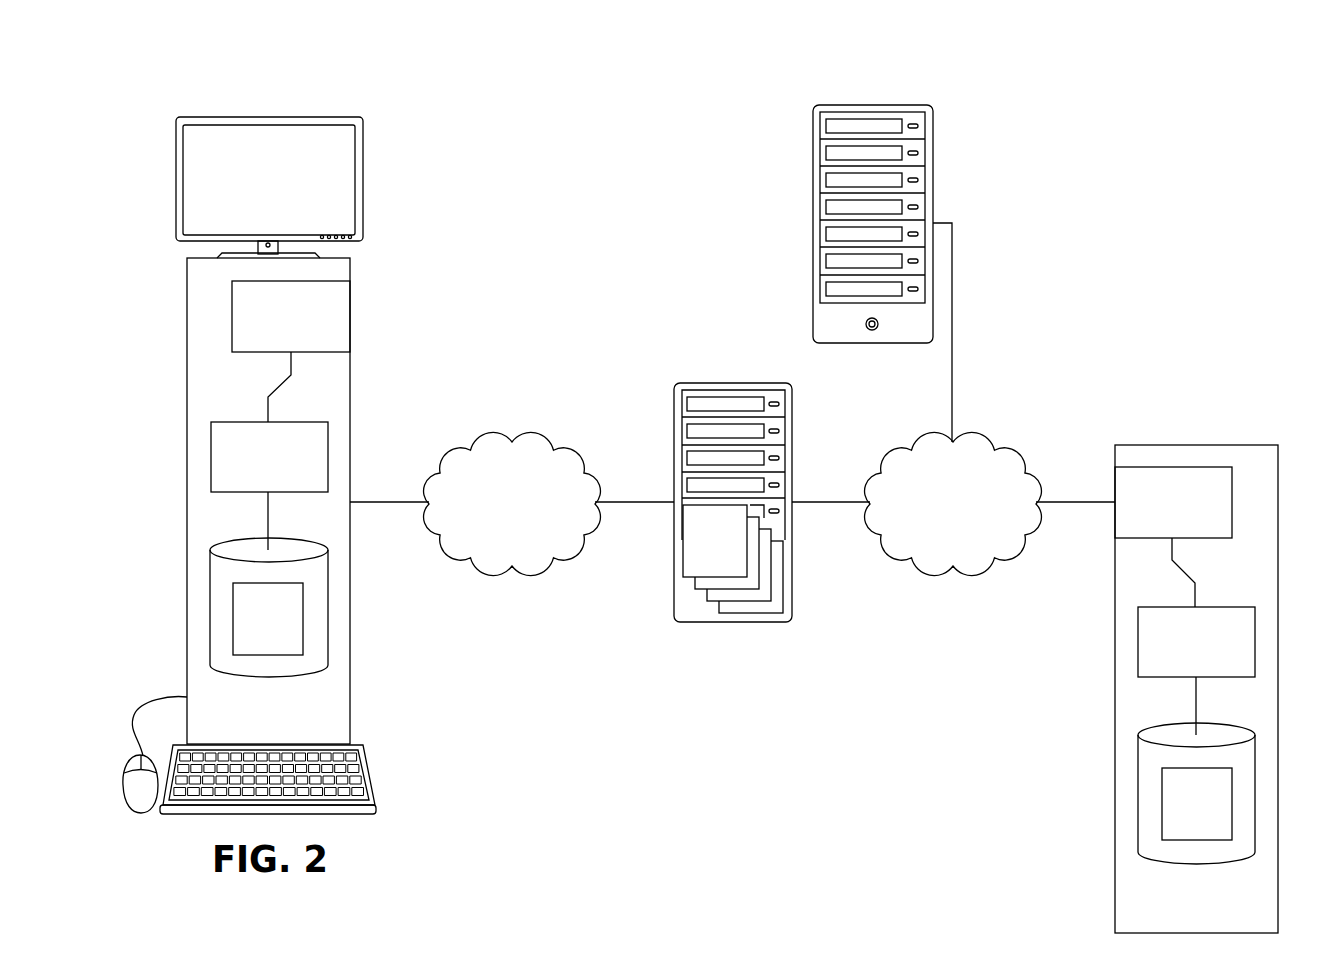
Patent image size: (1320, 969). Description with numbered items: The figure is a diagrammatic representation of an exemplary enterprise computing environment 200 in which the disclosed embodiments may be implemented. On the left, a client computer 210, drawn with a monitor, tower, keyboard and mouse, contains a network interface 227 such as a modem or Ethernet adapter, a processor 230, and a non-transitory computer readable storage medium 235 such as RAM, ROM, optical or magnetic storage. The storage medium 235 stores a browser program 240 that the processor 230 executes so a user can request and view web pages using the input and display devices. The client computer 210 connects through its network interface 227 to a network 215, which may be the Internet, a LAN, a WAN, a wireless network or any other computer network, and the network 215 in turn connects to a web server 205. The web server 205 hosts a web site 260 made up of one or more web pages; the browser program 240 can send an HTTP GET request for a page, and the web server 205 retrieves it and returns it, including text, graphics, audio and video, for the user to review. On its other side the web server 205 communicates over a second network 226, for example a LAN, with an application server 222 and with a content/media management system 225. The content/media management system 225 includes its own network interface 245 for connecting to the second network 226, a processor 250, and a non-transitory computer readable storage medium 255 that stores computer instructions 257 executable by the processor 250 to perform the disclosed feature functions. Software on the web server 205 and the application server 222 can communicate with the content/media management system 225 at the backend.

The enterprise computing environment 200 is at (1208, 71).
The client computer 210 is at (244, 97).
The network interface 227 is at (268, 330).
The processor 230 is at (246, 470).
The non-transitory computer readable storage medium 235 is at (269, 637).
The browser program 240 is at (245, 631).
The network 215 is at (489, 515).
The web server 205 is at (732, 383).
The web site 260 is at (692, 552).
The application server 222 is at (870, 105).
The second network 226 is at (930, 515).
The content/media management system 225 is at (1210, 444).
The network interface 245 is at (1149, 516).
The processor 250 is at (1173, 656).
The non-transitory computer readable storage medium 255 is at (1196, 823).
The computer instructions 257 is at (1174, 817).